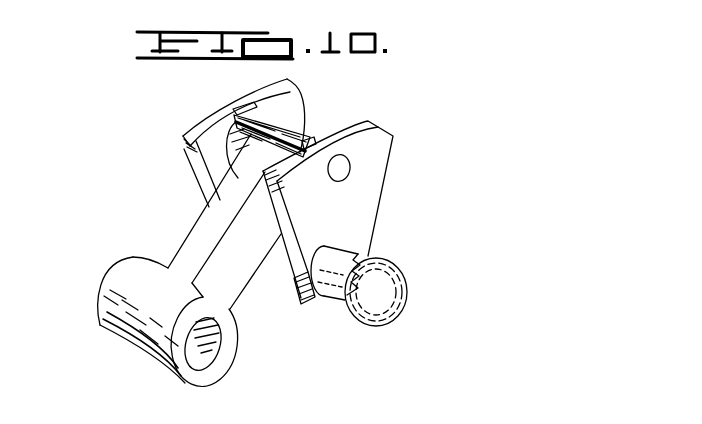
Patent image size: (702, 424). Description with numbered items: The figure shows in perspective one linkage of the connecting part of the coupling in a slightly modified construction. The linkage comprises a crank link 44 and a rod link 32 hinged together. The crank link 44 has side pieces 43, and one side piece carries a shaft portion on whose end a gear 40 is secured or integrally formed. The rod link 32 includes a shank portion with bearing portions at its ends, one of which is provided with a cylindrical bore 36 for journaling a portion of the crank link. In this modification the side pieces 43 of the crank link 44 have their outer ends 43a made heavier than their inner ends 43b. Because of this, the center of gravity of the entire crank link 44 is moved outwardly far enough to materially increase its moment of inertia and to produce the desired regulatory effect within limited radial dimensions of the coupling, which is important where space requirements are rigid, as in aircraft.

The rod link 32 is at (198, 230).
The cylindrical bore 36 is at (195, 362).
The gear 40 is at (392, 287).
The side pieces 43 is at (222, 178).
The outer ends 43a is at (296, 99).
The inner ends 43b is at (298, 300).
The crank link 44 is at (316, 214).